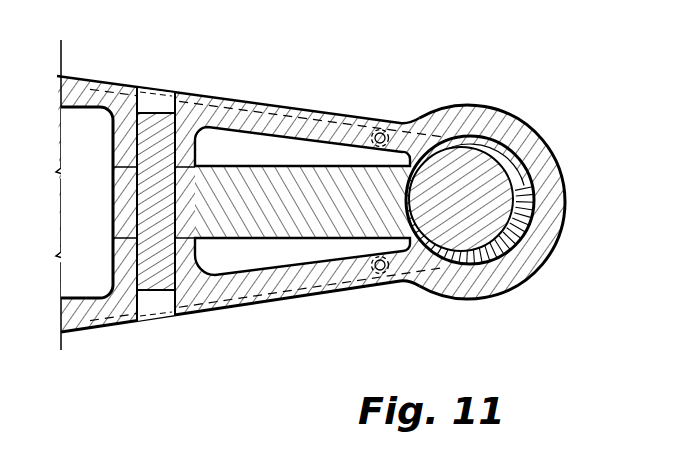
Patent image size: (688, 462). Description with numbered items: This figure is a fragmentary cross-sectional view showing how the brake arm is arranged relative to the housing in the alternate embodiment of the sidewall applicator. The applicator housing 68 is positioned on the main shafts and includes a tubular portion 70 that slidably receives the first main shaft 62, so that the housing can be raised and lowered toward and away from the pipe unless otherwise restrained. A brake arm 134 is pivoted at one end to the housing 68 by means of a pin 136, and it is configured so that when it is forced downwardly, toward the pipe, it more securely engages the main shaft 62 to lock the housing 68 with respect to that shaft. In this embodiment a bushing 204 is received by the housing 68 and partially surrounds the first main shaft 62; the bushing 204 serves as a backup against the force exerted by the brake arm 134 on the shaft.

The applicator housing 68 is at (311, 122).
The main shaft 62 is at (462, 193).
The tubular portion 70 is at (532, 148).
The brake arm 134 is at (310, 200).
The pin 136 is at (157, 257).
The bushing 204 is at (533, 218).